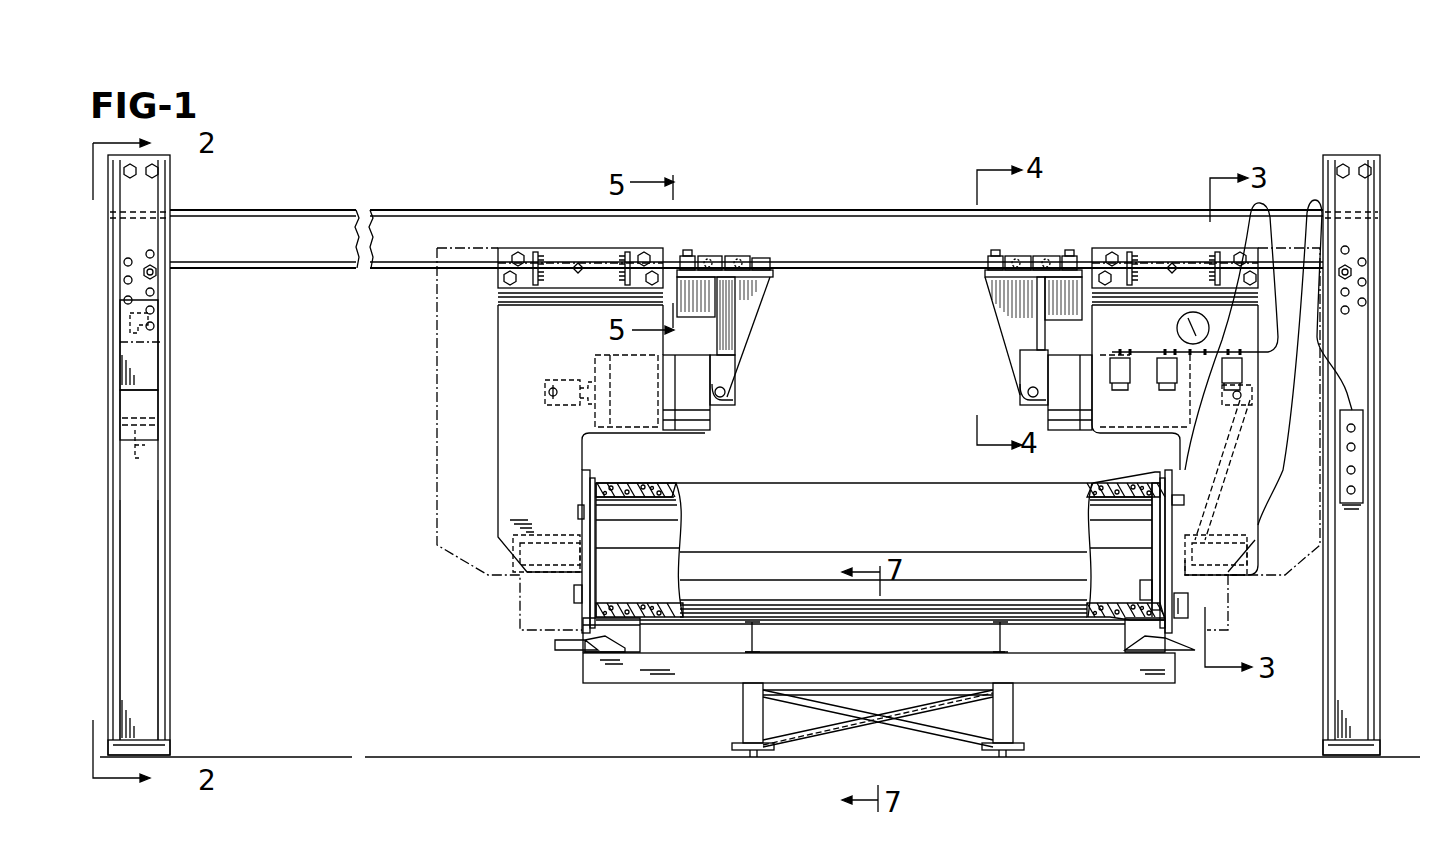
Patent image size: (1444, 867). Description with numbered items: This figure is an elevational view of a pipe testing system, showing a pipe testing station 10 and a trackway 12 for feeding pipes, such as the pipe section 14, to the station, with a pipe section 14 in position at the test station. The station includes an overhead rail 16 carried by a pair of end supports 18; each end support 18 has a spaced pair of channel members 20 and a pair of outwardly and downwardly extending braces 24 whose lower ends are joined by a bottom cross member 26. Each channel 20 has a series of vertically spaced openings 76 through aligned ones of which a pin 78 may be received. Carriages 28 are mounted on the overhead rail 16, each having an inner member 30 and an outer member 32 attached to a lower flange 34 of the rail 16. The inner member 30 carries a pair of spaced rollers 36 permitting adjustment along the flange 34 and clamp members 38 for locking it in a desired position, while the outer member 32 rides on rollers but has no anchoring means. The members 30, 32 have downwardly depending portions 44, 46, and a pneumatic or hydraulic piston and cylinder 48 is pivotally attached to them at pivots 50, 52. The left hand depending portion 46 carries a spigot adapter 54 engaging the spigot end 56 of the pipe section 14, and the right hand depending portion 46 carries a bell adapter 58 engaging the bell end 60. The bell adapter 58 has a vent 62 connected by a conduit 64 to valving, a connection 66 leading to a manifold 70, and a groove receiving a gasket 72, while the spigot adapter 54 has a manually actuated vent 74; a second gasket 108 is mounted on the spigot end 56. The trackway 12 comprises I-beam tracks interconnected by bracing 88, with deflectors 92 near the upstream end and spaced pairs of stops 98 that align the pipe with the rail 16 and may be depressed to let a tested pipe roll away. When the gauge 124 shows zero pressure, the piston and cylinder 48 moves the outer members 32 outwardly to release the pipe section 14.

The pipe testing station 10 is at (797, 187).
The trackway 12 is at (570, 708).
The pipe section 14 is at (833, 486).
The overhead rail 16 is at (845, 208).
The end support 18 is at (190, 502).
The channel member 20 is at (178, 368).
The brace 24 is at (160, 636).
The bottom cross member 26 is at (168, 745).
The carriage 28 is at (819, 411).
The inner member 30 is at (853, 295).
The outer member 32 is at (495, 322).
The lower flange 34 is at (355, 270).
The roller 36 is at (733, 258).
The clamp member 38 is at (686, 252).
The downwardly depending portion 44 is at (758, 317).
The downwardly depending portion 46 is at (495, 430).
The piston and cylinder 48 is at (683, 428).
The pivotal attachment 50 is at (726, 392).
The pivotal attachment 52 is at (552, 388).
The spigot adapter 54 is at (580, 478).
The spigot end 56 is at (606, 608).
The bell adapter 58 is at (1198, 588).
The bell end 60 is at (1160, 470).
The vent 62 is at (1186, 500).
The conduit 64 is at (1258, 205).
The connection 66 is at (1150, 580).
The manifold 70 is at (1365, 440).
The gasket 72 is at (1152, 530).
The manually actuated vent 74 is at (596, 500).
The openings 76 is at (148, 252).
The pin 78 is at (157, 275).
The bracing 88 is at (840, 712).
The deflector 92 is at (555, 645).
The stops 98 is at (750, 635).
The second gasket 108 is at (608, 490).
The gauge 124 is at (1176, 328).